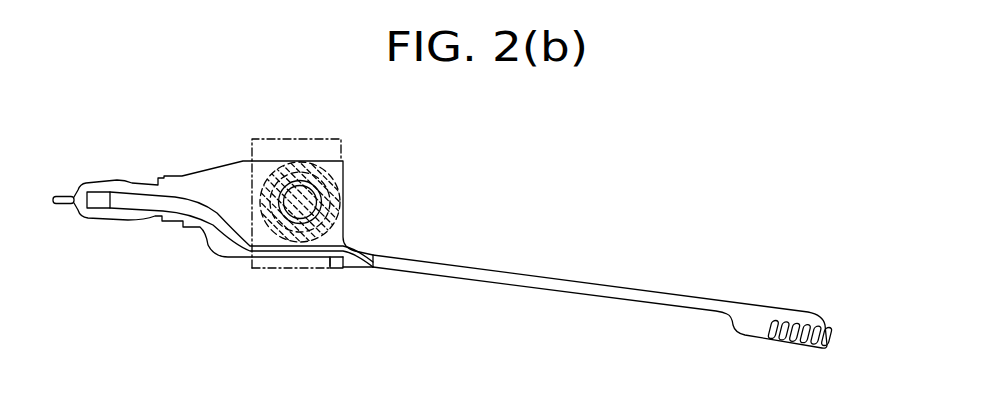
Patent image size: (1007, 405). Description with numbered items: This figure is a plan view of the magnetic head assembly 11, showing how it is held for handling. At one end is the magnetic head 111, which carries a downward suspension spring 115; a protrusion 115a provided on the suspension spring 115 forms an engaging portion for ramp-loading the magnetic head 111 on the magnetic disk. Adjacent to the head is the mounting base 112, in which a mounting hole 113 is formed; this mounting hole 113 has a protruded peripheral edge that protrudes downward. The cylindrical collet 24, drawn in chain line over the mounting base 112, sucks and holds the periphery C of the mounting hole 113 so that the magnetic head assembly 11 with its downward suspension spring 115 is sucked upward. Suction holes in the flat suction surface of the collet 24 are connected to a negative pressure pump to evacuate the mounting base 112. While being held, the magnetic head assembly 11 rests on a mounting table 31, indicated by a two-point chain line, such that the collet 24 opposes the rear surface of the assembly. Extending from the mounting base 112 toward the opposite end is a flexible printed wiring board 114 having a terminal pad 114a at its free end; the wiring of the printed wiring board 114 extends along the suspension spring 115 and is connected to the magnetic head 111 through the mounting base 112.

The magnetic head assembly 11 is at (460, 194).
The magnetic head 111 is at (98, 198).
The mounting base 112 is at (220, 210).
The mounting hole 113 is at (312, 200).
The flexible printed wiring board 114 is at (628, 292).
The terminal pad 114a is at (784, 320).
The suspension spring 115 is at (232, 139).
The protrusion 115a is at (62, 204).
The cylindrical collet 24 is at (338, 178).
The mounting table 31 is at (333, 280).
The periphery C is at (274, 221).